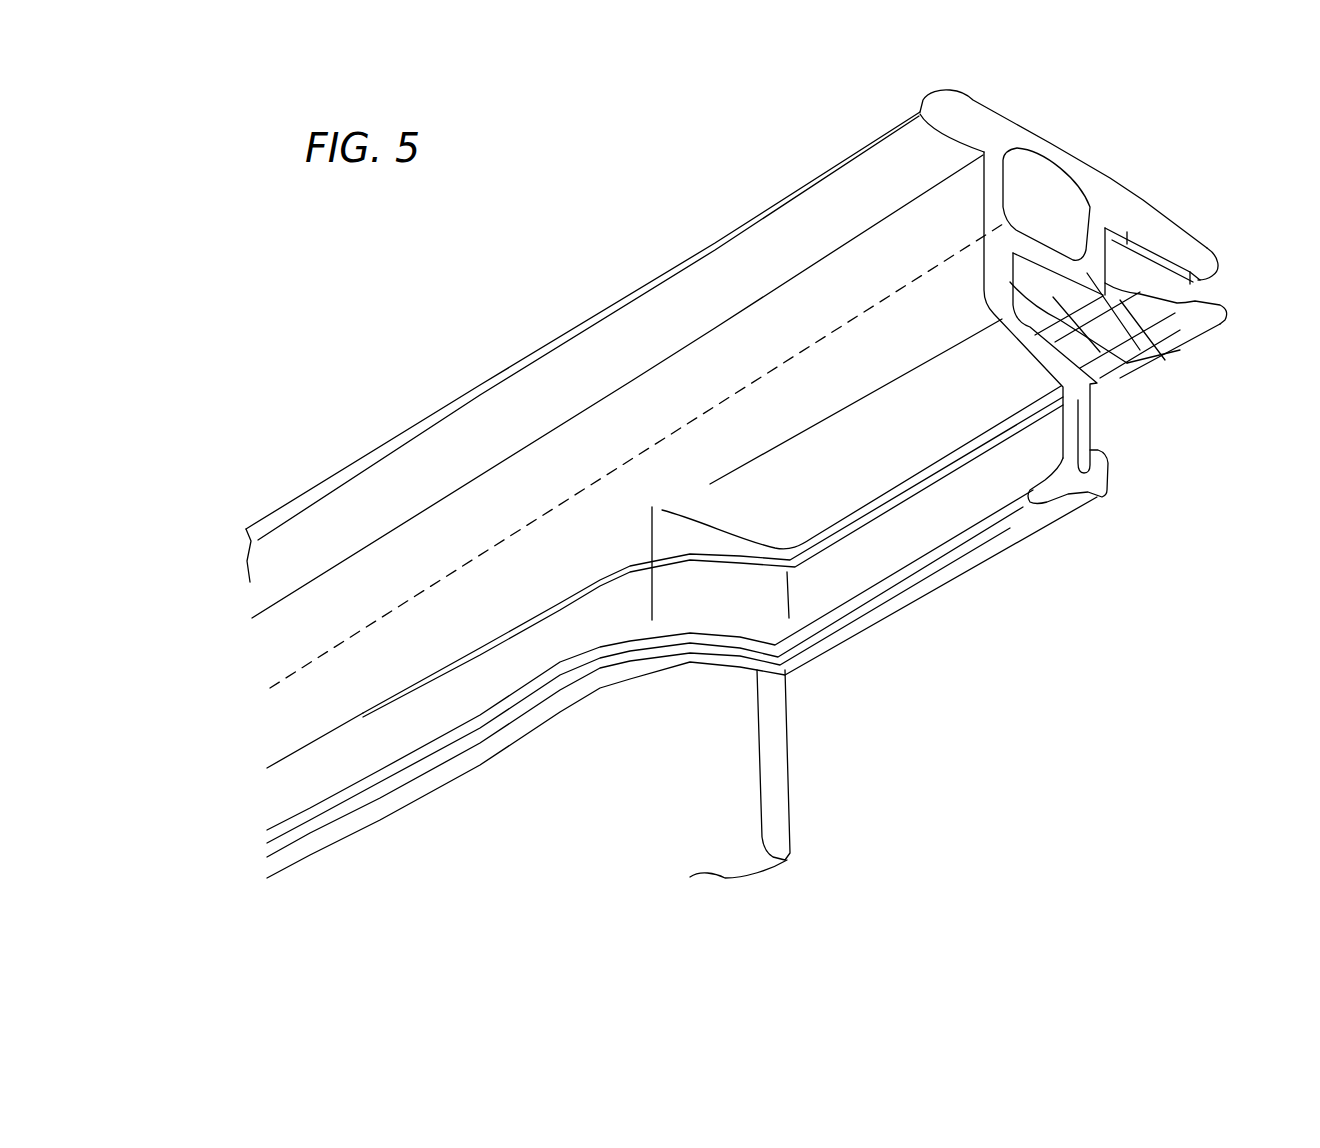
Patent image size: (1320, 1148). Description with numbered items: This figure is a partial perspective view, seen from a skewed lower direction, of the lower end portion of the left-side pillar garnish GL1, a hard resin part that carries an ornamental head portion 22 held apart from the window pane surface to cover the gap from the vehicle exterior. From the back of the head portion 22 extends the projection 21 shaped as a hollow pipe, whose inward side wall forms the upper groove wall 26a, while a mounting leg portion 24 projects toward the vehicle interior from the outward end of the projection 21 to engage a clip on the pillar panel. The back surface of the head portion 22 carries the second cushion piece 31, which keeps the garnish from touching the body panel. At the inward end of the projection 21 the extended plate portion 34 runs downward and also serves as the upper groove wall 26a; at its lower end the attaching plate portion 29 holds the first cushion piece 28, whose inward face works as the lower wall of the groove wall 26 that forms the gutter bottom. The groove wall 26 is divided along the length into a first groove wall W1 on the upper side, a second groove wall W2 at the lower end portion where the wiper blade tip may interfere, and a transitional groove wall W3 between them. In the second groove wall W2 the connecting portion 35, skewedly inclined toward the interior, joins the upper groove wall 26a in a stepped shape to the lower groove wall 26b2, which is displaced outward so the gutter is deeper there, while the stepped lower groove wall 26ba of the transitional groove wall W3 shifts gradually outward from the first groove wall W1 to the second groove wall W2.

The ornamental head portion 22 is at (1007, 135).
The pillar garnish GL1 is at (1096, 297).
The second cushion piece 31 is at (1197, 298).
The projection 21 is at (1185, 345).
The extended plate portion 34 is at (1123, 367).
The attaching plate portion 29 is at (1093, 428).
The connecting portion 35 is at (927, 420).
The groove wall 26 is at (671, 495).
The upper groove wall 26a is at (705, 392).
The lower groove wall of the transitional groove wall 26ba is at (727, 612).
The lower groove wall of the second groove wall 26b2 is at (682, 684).
The first cushion piece 28 is at (565, 772).
The mounting leg portion 24 is at (777, 795).
The first groove wall W1 is at (452, 802).
The second groove wall W2 is at (877, 654).
The transitional groove wall W3 is at (686, 678).